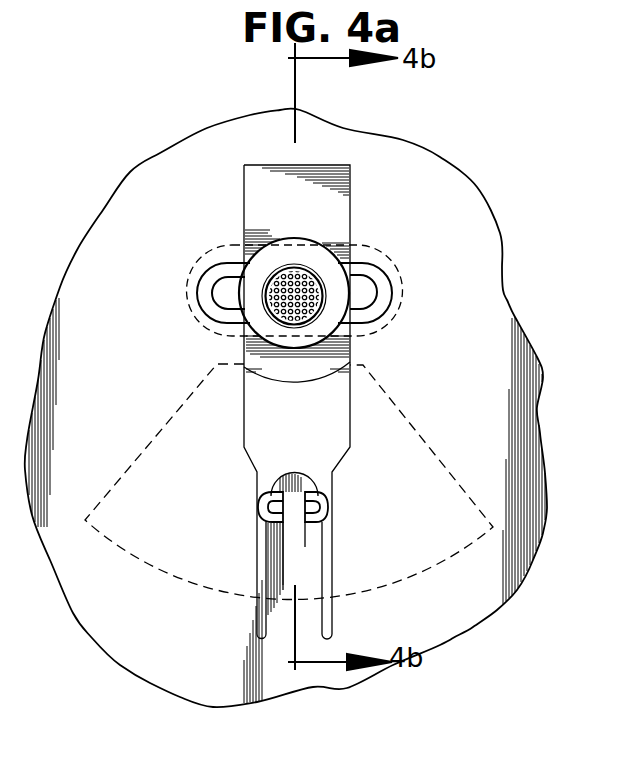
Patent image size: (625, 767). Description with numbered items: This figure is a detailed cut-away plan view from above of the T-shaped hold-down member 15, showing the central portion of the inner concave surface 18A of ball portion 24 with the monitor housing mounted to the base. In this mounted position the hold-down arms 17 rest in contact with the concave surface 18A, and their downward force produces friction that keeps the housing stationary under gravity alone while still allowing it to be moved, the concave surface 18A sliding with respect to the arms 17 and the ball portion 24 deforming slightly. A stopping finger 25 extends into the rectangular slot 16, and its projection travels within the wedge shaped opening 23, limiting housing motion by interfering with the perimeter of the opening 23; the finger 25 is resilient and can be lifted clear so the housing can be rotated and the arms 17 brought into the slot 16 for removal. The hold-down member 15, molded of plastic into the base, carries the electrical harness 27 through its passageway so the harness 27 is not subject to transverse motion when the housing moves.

The inner concave surface 18A is at (168, 176).
The ball portion 24 is at (295, 407).
The hold-down member 15 is at (310, 250).
The electrical harness 27 is at (270, 270).
The hold-down arms 17 is at (374, 306).
The rectangular slot 16 is at (282, 449).
The stopping finger 25 is at (307, 553).
The wedge shaped opening 23 is at (130, 495).